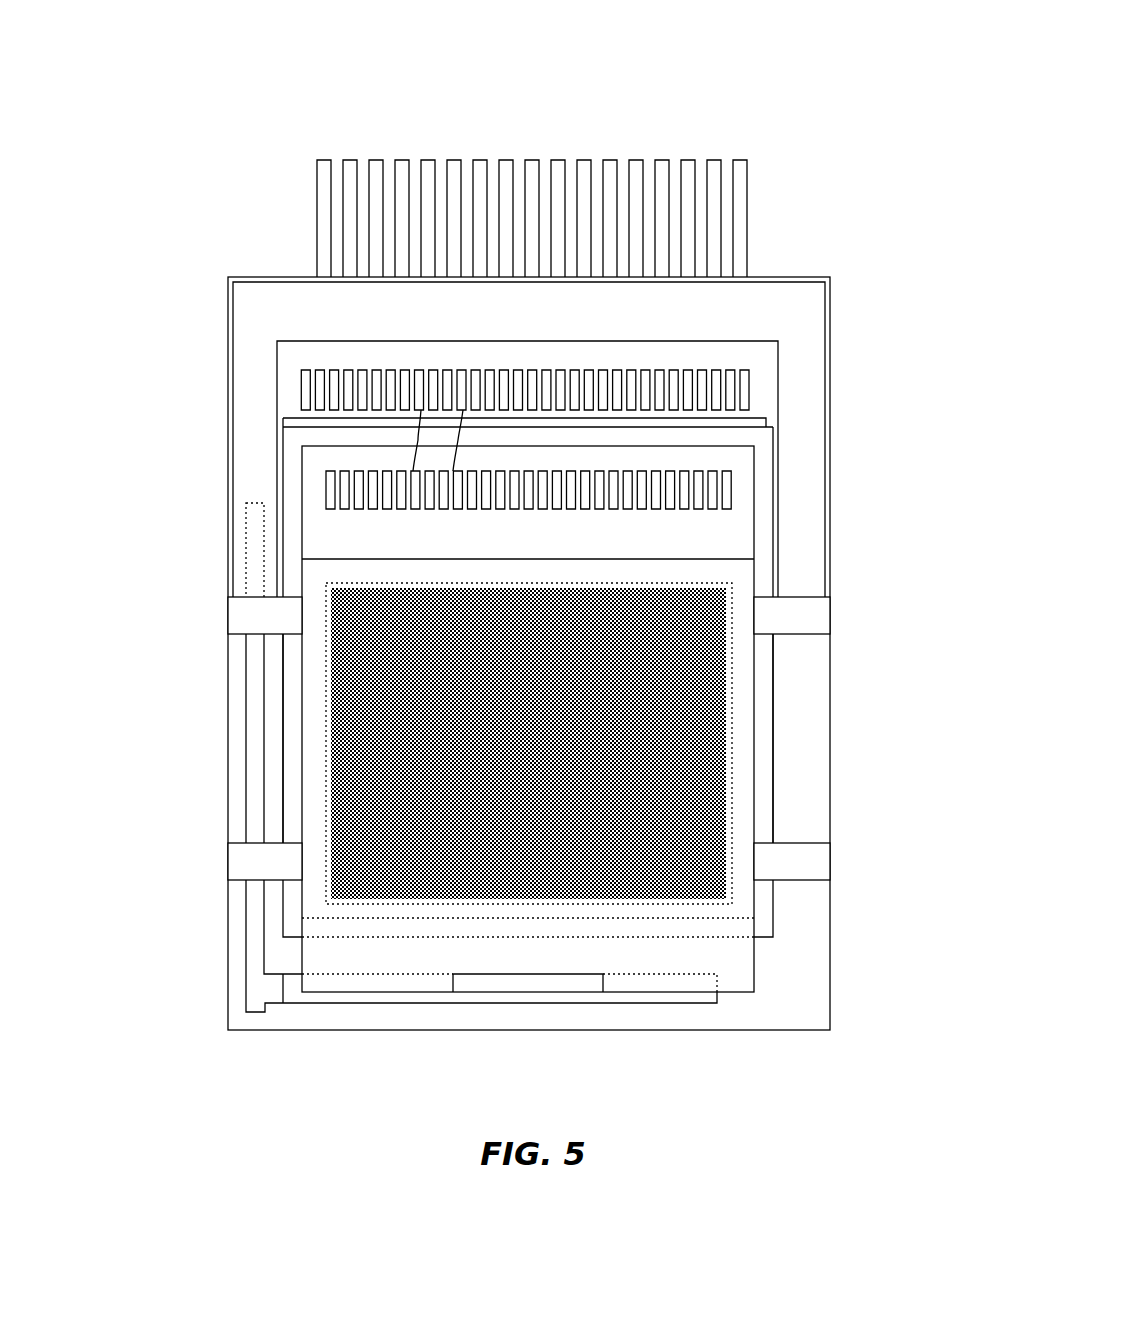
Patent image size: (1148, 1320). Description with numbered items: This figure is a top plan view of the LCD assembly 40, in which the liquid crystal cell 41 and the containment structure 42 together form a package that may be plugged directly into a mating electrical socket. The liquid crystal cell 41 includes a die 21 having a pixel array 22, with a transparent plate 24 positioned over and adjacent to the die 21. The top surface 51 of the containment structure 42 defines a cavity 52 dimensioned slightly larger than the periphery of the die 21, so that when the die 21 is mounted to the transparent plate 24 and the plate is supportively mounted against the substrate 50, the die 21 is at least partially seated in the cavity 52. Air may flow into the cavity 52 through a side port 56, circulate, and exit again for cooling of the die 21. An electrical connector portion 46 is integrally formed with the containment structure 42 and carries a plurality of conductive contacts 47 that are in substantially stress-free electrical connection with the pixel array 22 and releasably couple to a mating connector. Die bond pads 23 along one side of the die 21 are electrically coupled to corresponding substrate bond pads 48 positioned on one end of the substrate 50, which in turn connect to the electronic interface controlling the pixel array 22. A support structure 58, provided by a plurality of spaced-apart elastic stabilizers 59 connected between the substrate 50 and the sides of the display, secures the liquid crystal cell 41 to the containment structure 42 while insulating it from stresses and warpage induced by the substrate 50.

The LCD assembly 40 is at (853, 208).
The electrical connector portion 46 is at (290, 277).
The conductive contacts 47 is at (429, 160).
The substrate bond pads 48 is at (742, 375).
The cavity 52 is at (290, 480).
The containment structure 42 is at (832, 478).
The liquid crystal cell 41 is at (757, 690).
The die bond pads 23 is at (727, 476).
The top surface 51 is at (418, 440).
The die 21 is at (754, 520).
The pixel array 22 is at (338, 793).
The substrate 50 is at (233, 663).
The side port 56 is at (287, 730).
The transparent plate 24 is at (731, 993).
The stabilizers 59 is at (233, 598).
The support structure 58 is at (803, 583).